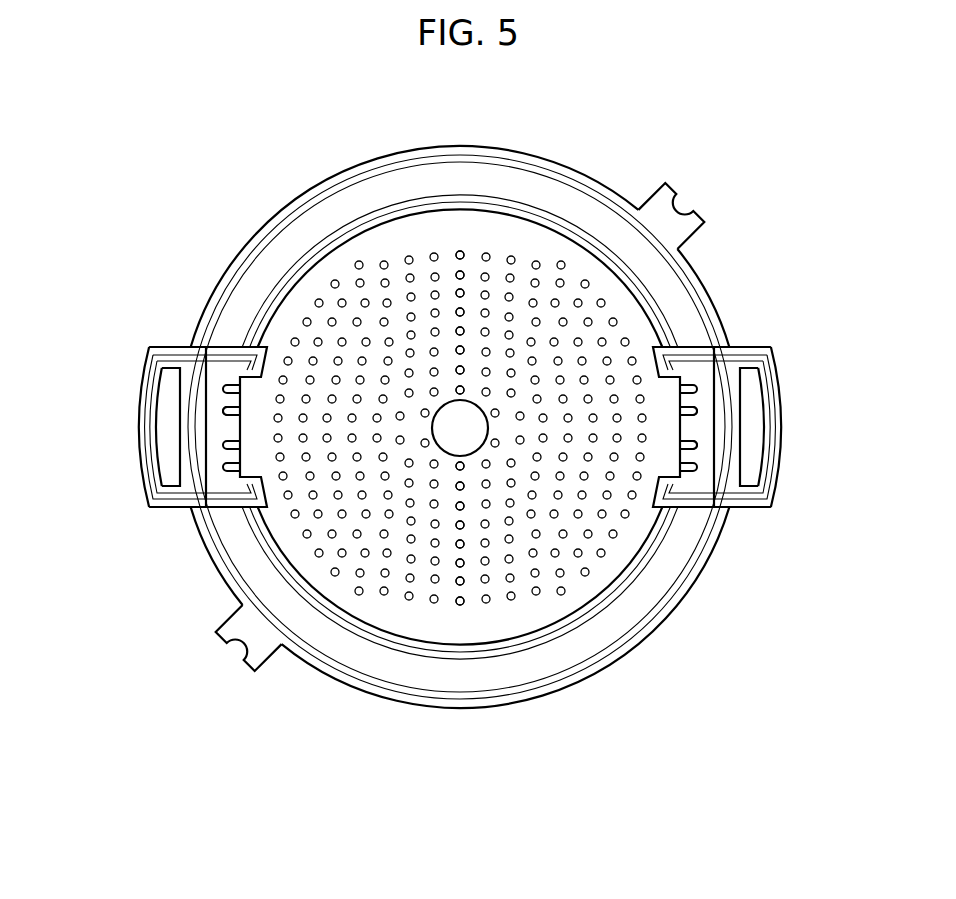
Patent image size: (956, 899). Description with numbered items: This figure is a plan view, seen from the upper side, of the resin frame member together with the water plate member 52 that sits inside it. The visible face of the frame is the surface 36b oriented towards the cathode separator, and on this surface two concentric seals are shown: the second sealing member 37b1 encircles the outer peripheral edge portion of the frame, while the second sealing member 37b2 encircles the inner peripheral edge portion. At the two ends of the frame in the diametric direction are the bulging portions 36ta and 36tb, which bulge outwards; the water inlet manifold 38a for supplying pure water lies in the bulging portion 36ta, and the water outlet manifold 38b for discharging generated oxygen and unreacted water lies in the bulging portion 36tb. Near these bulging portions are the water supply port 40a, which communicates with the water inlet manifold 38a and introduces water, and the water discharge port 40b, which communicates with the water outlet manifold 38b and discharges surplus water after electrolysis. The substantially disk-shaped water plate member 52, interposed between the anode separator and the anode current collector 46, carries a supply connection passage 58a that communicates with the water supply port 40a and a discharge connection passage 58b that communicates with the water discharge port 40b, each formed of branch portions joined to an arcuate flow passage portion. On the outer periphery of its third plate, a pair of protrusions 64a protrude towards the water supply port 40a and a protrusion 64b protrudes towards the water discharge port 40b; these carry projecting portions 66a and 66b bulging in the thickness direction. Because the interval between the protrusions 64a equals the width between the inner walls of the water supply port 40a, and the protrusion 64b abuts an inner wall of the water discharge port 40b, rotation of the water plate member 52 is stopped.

The surface 36b is at (543, 186).
The bulging portion 36ta is at (146, 362).
The bulging portion 36tb is at (774, 362).
The second sealing member 37b1 is at (268, 242).
The second sealing member 37b2 is at (334, 232).
The water inlet manifold 38a is at (160, 478).
The water outlet manifold 38b is at (760, 478).
The water supply port 40a is at (216, 432).
The water discharge port 40b is at (705, 432).
The anode current collector 46 is at (481, 631).
The water plate member 52 is at (705, 410).
The supply connection passage 58a is at (222, 410).
The discharge connection passage 58b is at (700, 447).
The protrusion 64a is at (233, 372).
The protrusion 64b is at (687, 483).
The projecting portion 66a is at (243, 385).
The projecting portion 66b is at (677, 471).